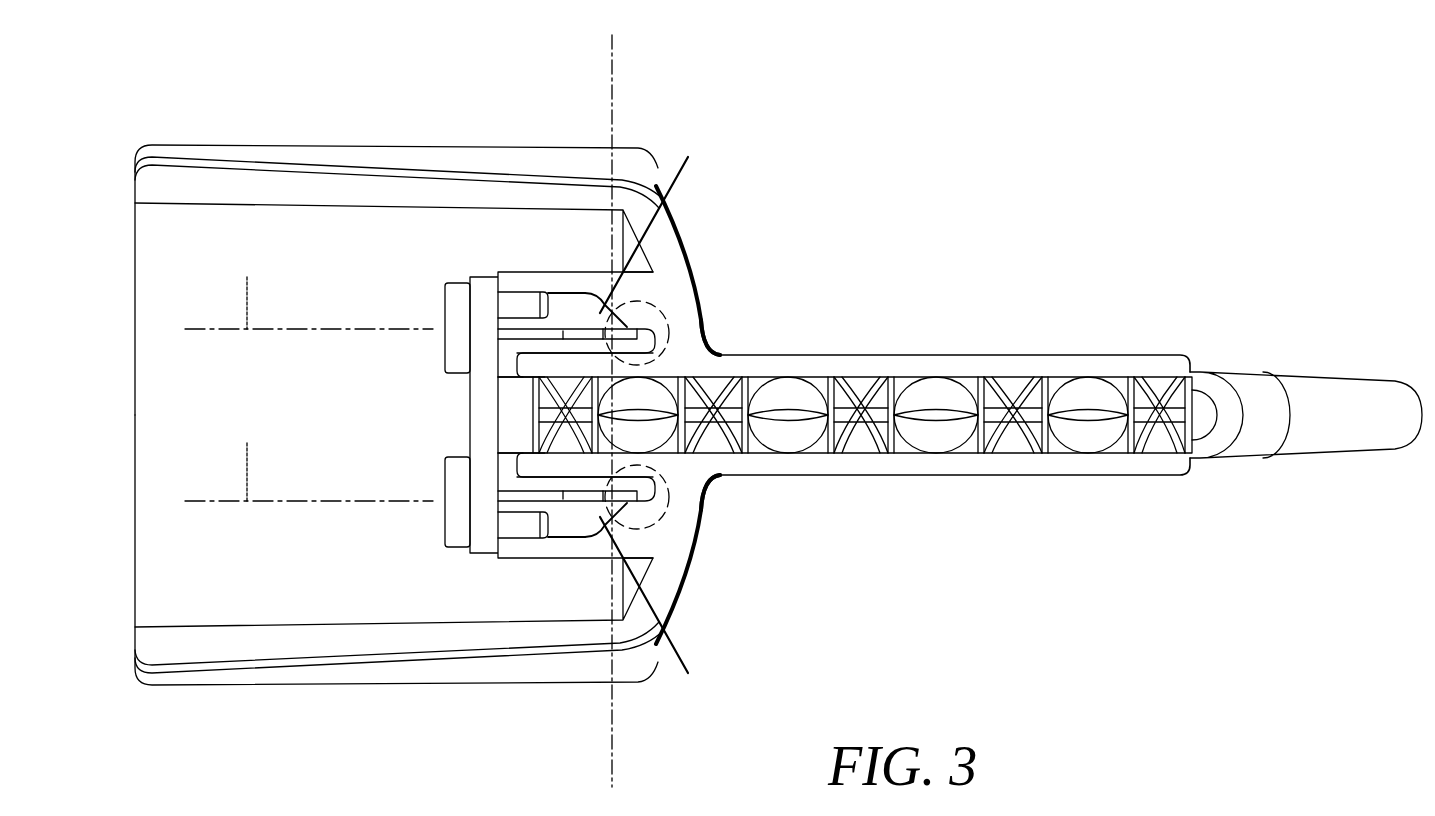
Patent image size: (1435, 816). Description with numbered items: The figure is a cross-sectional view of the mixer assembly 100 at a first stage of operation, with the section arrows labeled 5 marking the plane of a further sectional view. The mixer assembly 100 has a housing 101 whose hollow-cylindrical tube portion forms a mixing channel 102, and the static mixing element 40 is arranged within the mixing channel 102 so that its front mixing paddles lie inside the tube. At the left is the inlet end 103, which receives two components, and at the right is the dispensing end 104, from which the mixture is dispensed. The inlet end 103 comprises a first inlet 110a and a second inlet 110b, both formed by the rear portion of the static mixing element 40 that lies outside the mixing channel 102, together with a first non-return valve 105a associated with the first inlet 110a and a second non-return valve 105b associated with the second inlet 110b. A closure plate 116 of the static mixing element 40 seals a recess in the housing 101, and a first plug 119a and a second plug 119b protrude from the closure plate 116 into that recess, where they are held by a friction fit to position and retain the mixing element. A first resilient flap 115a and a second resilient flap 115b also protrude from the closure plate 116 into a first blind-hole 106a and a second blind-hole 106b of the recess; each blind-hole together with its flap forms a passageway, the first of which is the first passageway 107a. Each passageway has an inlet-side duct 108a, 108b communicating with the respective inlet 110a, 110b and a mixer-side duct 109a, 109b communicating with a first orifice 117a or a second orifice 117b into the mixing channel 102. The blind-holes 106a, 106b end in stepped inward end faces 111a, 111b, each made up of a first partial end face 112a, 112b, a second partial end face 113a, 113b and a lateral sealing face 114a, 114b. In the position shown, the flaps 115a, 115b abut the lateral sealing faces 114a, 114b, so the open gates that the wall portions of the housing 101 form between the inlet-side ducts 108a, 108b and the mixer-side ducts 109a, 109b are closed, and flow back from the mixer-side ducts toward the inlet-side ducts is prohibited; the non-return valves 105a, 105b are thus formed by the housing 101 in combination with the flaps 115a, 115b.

The section line 5- 5 is at (700, 787).
The mixer assembly 100 is at (353, 112).
The housing 101 is at (677, 258).
The mixing channel 102 is at (967, 387).
The inlet end 103 is at (117, 643).
The dispensing end 104 is at (1375, 363).
The static mixing element 40 is at (1085, 397).
The first non-return valve 105a is at (548, 442).
The second non-return valve 105b is at (548, 390).
The first blind-hole 106a is at (587, 533).
The second blind-hole 106b is at (555, 308).
The first passageway 107a is at (613, 300).
The first inlet-side duct 108a is at (613, 530).
The second inlet-side duct 108b is at (587, 297).
The first mixer-side duct 109a is at (673, 483).
The second mixer-side duct 109b is at (673, 347).
The first inlet 110a is at (457, 540).
The second inlet 110b is at (457, 290).
The first stepped inward end face 111a is at (647, 523).
The second stepped inward end face 111b is at (647, 307).
The first partial end face 112a is at (653, 497).
The first partial end face 112b is at (653, 333).
The second partial end face 113a is at (657, 609).
The second partial end face 113b is at (646, 221).
The lateral sealing face 114a is at (640, 522).
The lateral sealing face 114b is at (640, 308).
The first resilient flap 115a is at (579, 503).
The second resilient flap 115b is at (579, 330).
The closure plate 116 is at (482, 307).
The first orifice 117a is at (508, 470).
The second orifice 117b is at (508, 360).
The first plug 119a is at (525, 527).
The second plug 119b is at (523, 303).